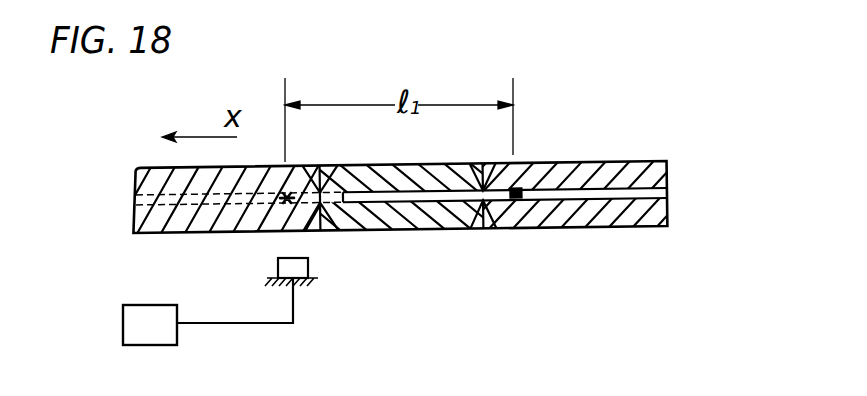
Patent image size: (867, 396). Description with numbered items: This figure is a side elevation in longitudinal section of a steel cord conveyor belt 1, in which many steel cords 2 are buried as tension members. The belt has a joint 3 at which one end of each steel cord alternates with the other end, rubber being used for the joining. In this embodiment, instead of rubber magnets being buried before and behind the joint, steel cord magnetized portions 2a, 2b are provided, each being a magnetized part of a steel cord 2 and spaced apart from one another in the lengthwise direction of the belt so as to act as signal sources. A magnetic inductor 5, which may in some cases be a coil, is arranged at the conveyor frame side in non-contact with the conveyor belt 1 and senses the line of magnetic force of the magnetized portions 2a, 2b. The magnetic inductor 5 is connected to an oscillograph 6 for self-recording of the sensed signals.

The steel cord conveyor belt 1 is at (563, 163).
The steel cord 2 is at (602, 195).
The steel cord magnetized portion 2a is at (281, 200).
The steel cord magnetized portion 2b is at (514, 205).
The joint 3 is at (430, 206).
The magnetic inductor 5 is at (309, 264).
The oscillograph 6 is at (148, 347).